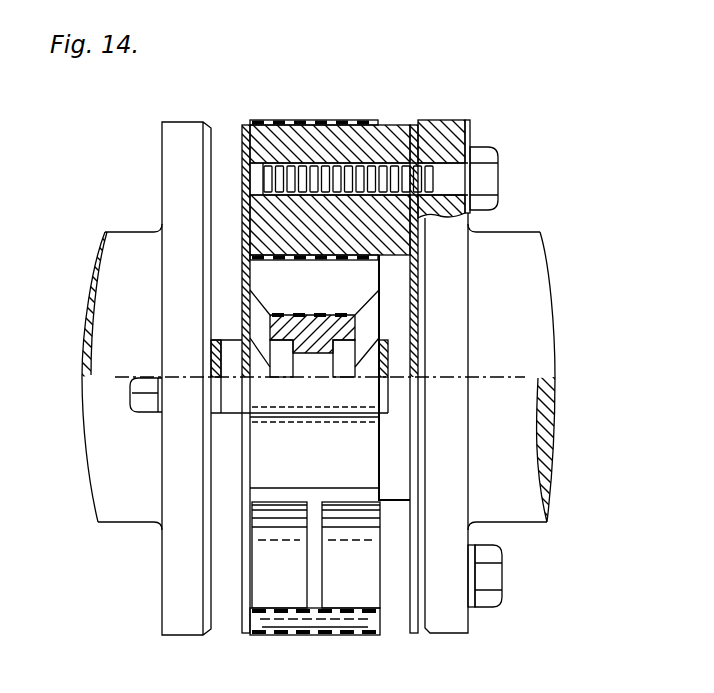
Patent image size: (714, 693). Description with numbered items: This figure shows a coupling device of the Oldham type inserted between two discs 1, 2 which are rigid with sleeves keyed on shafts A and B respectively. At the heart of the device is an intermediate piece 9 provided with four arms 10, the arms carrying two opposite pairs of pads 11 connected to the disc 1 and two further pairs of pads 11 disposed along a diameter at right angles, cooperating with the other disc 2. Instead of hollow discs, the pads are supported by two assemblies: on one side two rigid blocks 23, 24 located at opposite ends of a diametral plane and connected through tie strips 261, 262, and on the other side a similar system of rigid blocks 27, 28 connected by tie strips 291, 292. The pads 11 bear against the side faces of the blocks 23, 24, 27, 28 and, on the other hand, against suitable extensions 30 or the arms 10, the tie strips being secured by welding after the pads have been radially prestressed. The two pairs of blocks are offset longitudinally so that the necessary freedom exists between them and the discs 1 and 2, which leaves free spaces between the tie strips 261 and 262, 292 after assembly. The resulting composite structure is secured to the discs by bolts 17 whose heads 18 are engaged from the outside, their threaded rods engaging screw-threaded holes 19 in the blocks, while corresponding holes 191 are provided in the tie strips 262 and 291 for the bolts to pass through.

The disc 1 is at (175, 155).
The disc 2 is at (447, 488).
The intermediate piece 9 is at (350, 334).
The arms 10 is at (298, 280).
The pads 11 is at (322, 458).
The bolts 17 is at (386, 160).
The heads 18 is at (483, 152).
The screw-threaded holes 19 is at (255, 177).
The holes 191 is at (465, 207).
The rigid block 23 is at (305, 152).
The rigid block 24 is at (397, 618).
The tie strip 261 is at (242, 208).
The tie strip 262 is at (413, 313).
The rigid block 27 is at (232, 343).
The rigid block 28 is at (233, 407).
The tie strip 291 is at (212, 355).
The tie strip 292 is at (388, 361).
The extensions 30 is at (337, 493).
The shaft A is at (124, 500).
The shaft B is at (498, 468).